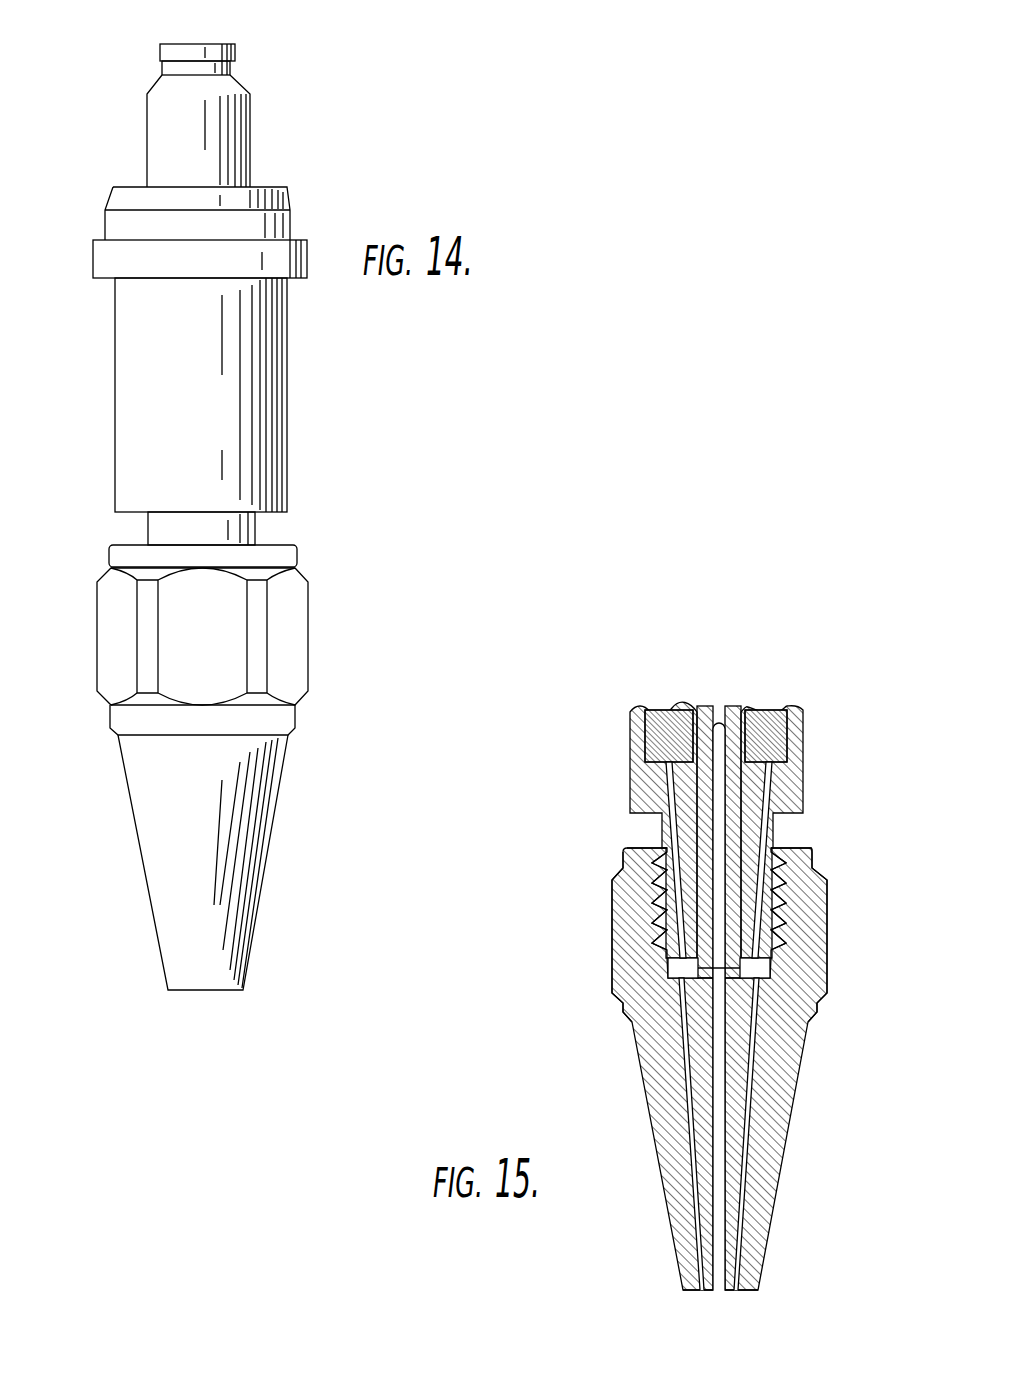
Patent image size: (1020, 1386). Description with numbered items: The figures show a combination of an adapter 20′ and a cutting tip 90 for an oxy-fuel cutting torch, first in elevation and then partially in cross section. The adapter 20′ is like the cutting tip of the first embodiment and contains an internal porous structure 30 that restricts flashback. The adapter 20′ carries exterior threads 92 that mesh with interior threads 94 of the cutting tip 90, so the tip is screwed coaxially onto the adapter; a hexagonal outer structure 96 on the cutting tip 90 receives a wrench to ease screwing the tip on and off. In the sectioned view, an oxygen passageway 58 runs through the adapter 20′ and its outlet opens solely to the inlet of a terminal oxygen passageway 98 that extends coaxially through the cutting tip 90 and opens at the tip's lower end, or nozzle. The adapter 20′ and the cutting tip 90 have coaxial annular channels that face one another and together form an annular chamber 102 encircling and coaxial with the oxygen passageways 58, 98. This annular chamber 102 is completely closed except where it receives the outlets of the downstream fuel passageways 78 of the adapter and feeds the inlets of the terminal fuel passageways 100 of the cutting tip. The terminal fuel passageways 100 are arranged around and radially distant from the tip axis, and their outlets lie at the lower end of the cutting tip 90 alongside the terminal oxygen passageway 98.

In FIG. 14, the adapter 20′ is at (252, 150).
In FIG. 15, the adapter 20′ is at (626, 733).
In FIG. 15, the internal porous structure 30 is at (657, 710).
In FIG. 15, the oxygen passageway 58 is at (716, 722).
In FIG. 15, the downstream fuel passageways 78 is at (665, 838).
In FIG. 14, the cutting tip 90 is at (111, 545).
In FIG. 15, the cutting tip 90 is at (640, 1096).
In FIG. 15, the exterior threads 92 is at (660, 940).
In FIG. 15, the interior threads 94 is at (775, 921).
In FIG. 14, the hexagonal outer structure 96 is at (95, 684).
In FIG. 15, the hexagonal outer structure 96 is at (827, 952).
In FIG. 15, the terminal oxygen passageway 98 is at (721, 1292).
In FIG. 15, the terminal fuel passageways 100 is at (700, 1292).
In FIG. 15, the annular chamber 102 is at (668, 972).